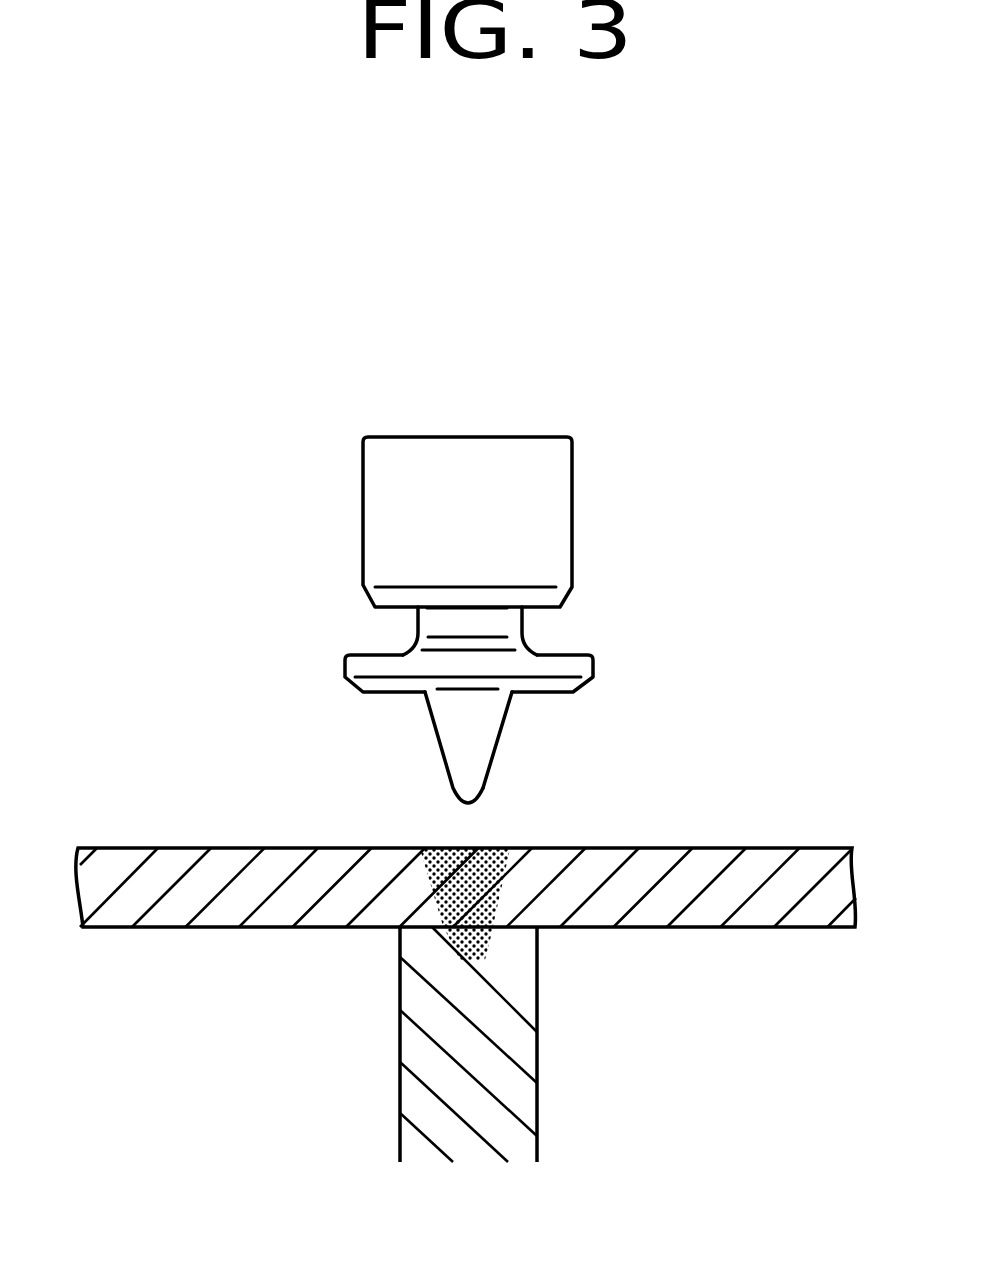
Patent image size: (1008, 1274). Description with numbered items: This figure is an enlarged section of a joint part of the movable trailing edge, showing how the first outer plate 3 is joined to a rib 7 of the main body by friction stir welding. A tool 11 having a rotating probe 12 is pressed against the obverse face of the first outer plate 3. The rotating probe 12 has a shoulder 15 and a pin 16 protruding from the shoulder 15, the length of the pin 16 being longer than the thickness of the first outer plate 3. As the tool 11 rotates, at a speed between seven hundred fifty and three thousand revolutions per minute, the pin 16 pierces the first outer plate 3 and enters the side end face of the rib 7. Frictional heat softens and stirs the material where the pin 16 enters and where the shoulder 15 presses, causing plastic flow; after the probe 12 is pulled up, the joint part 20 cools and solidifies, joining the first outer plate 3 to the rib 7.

The first outer plate 3 is at (800, 877).
The rib 7 is at (520, 1105).
The tool 11 is at (420, 608).
The rotating probe 12 is at (450, 735).
The shoulder 15 is at (547, 697).
The pin 16 is at (497, 753).
The joint part 20 is at (440, 870).